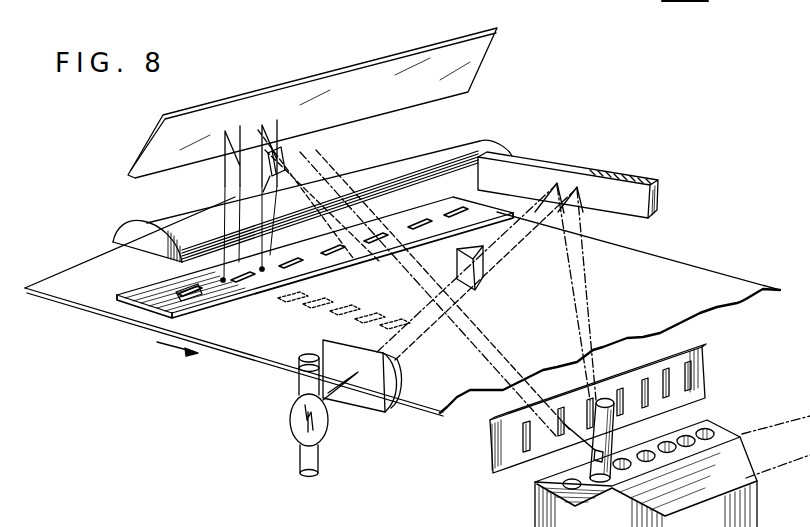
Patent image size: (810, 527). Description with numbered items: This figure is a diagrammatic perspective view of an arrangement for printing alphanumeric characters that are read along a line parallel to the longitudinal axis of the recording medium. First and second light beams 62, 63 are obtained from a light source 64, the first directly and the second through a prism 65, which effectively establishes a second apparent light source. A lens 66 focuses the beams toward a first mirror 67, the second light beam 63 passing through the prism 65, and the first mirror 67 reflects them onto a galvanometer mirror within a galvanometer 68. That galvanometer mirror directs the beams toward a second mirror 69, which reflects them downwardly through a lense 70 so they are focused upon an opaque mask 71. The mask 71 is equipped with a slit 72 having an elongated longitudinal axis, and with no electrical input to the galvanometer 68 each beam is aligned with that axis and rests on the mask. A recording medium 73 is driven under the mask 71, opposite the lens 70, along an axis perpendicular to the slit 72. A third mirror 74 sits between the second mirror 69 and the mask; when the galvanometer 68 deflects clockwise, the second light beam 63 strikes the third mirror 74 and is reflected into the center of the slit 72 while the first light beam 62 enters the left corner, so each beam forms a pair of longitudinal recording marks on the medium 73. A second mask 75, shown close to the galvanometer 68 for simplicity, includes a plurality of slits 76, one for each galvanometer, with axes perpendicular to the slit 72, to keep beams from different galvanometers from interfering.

The first light beam 62 is at (224, 143).
The second light beam 63 is at (262, 122).
The light source 64 is at (296, 415).
The prism 65 is at (480, 275).
The lens 66 is at (376, 412).
The first mirror 67 is at (598, 188).
The galvanometer 68 is at (653, 418).
The second mirror 69 is at (338, 92).
The lense 70 is at (403, 163).
The opaque mask 71 is at (342, 255).
The slit 72 is at (188, 291).
The recording medium 73 is at (262, 343).
The third mirror 74 is at (286, 160).
The second mask 75 is at (498, 447).
The slits 76 is at (665, 370).